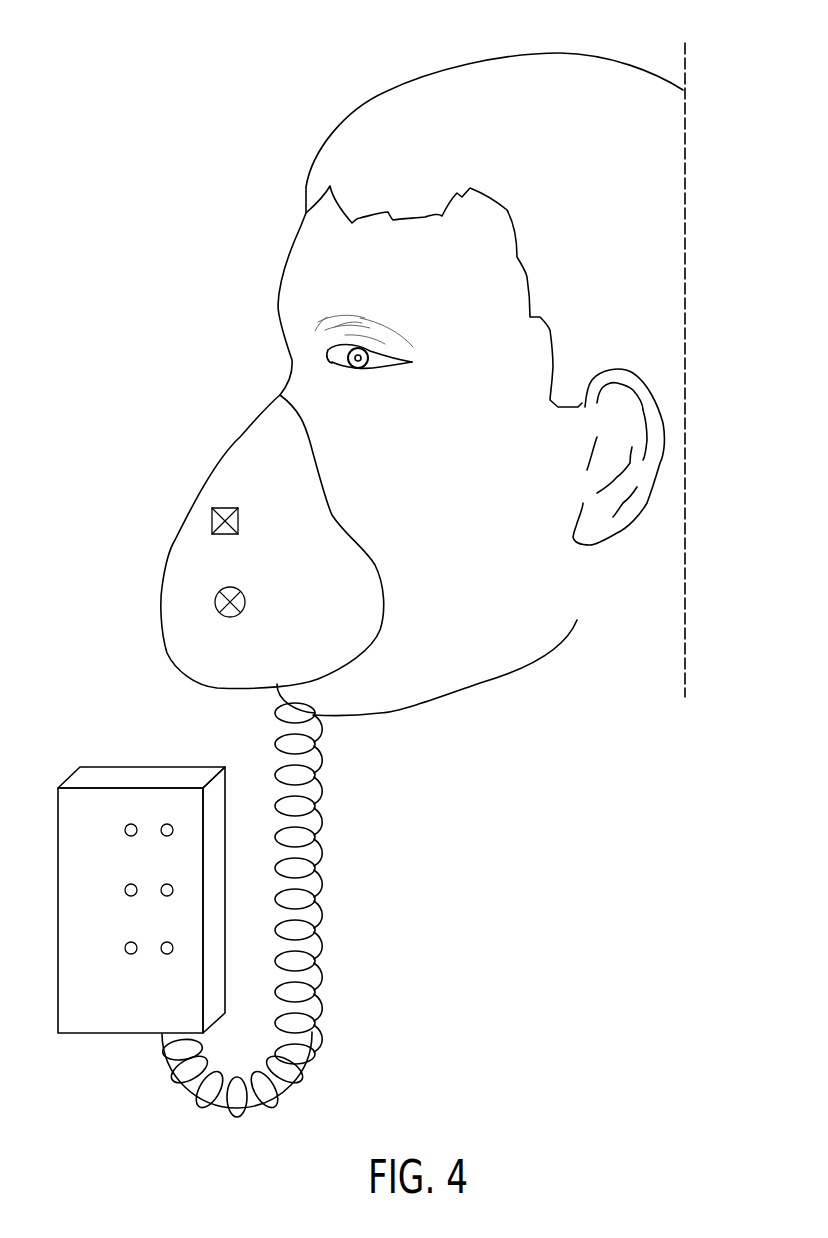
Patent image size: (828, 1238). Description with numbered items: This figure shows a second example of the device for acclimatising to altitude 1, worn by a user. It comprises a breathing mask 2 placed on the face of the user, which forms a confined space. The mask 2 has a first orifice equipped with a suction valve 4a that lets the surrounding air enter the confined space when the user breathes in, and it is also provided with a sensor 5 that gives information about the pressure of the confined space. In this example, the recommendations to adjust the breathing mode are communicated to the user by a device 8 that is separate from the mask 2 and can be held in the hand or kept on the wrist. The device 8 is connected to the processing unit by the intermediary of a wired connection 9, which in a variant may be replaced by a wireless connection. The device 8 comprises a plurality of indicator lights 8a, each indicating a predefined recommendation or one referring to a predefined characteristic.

The device for acclimatising to altitude 1 is at (467, 779).
The breathing mask 2 is at (263, 467).
The sensor 5 is at (220, 522).
The suction valve 4a is at (217, 603).
The device 8 is at (95, 777).
The indicator lights 8a is at (131, 823).
The wired connection 9 is at (313, 1013).